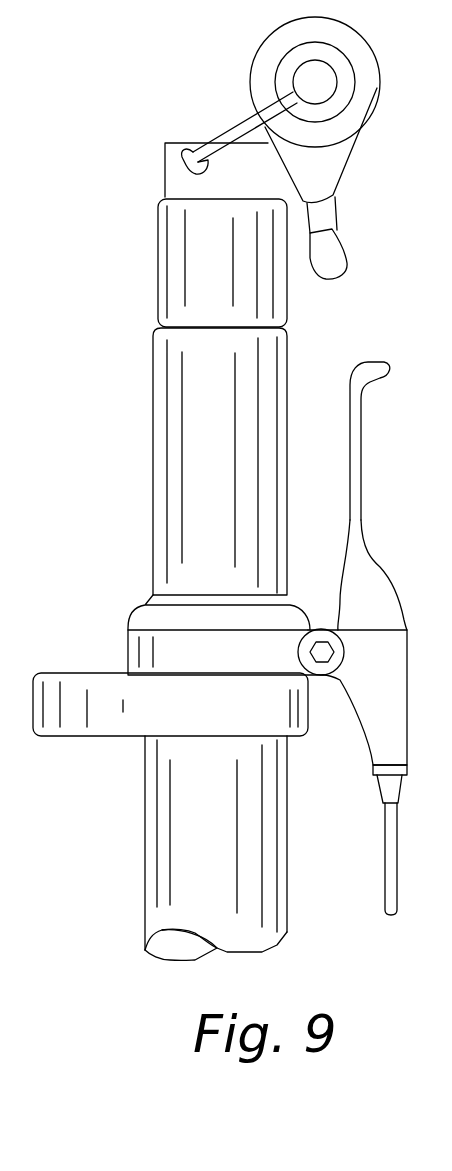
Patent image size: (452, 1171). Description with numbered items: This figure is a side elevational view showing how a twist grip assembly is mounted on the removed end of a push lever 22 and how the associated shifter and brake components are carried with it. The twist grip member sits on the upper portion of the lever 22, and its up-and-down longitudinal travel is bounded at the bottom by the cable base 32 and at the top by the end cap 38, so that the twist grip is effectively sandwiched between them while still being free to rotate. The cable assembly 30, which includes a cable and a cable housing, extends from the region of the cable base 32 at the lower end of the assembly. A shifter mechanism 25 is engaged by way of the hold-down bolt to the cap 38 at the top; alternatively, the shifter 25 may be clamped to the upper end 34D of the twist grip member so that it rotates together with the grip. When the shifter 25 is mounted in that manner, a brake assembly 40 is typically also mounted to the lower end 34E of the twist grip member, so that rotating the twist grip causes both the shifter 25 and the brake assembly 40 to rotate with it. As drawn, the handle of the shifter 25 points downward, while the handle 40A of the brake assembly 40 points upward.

The shifter mechanism 25 is at (380, 65).
The end cap 38 is at (148, 260).
The upper end of twist grip member 34D is at (297, 345).
The lower end of twist grip member 34E is at (115, 615).
The handle of brake assembly 40A is at (362, 487).
The brake assembly 40 is at (390, 688).
The cable assembly 30 is at (382, 840).
The cable base 32 is at (98, 730).
The lever 22 is at (143, 865).